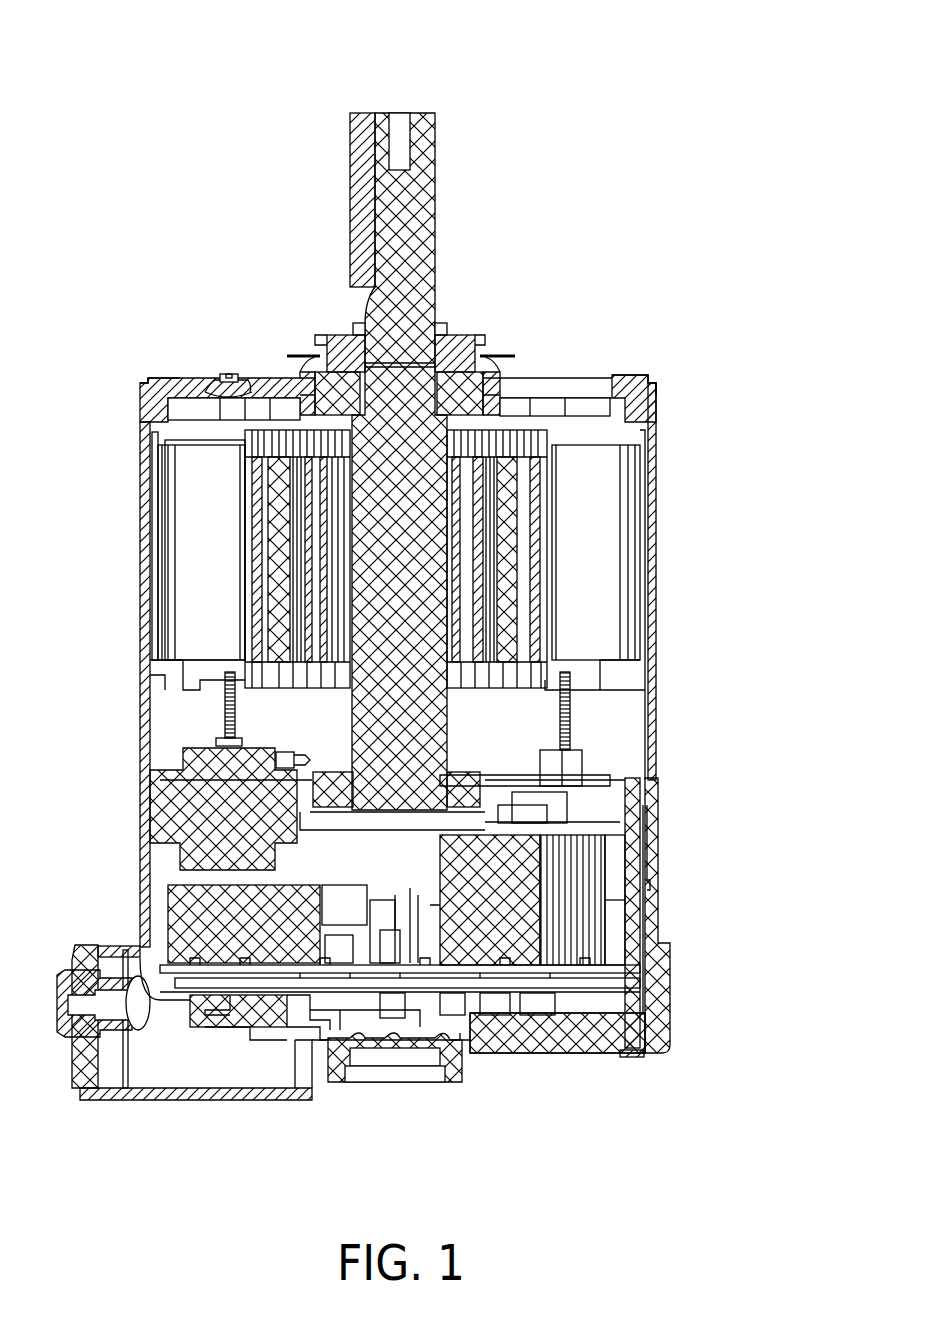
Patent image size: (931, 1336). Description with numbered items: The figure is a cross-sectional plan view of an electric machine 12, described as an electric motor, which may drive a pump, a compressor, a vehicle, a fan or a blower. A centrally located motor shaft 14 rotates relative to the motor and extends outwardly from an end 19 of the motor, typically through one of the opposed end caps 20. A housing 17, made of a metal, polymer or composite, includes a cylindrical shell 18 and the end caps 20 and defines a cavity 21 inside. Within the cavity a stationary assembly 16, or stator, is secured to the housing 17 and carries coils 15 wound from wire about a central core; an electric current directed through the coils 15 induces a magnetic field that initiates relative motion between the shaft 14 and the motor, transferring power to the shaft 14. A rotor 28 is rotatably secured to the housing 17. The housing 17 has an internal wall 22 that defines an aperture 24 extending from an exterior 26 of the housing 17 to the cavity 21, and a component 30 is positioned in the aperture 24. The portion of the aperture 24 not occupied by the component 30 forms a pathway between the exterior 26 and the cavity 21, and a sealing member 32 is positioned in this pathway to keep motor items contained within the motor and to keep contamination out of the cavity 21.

The electric machine 12 is at (630, 76).
The motor shaft 14 is at (436, 180).
The coils 15 is at (176, 475).
The stationary assembly 16 is at (172, 548).
The housing 17 is at (626, 305).
The cylindrical shell 18 is at (656, 545).
The end 19 is at (156, 380).
The end caps 20 is at (660, 382).
The cavity 21 is at (600, 718).
The internal wall 22 is at (646, 746).
The aperture 24 is at (226, 362).
The exterior 26 is at (268, 372).
The rotor 28 is at (240, 580).
The component 30 is at (232, 375).
The sealing member 32 is at (230, 392).